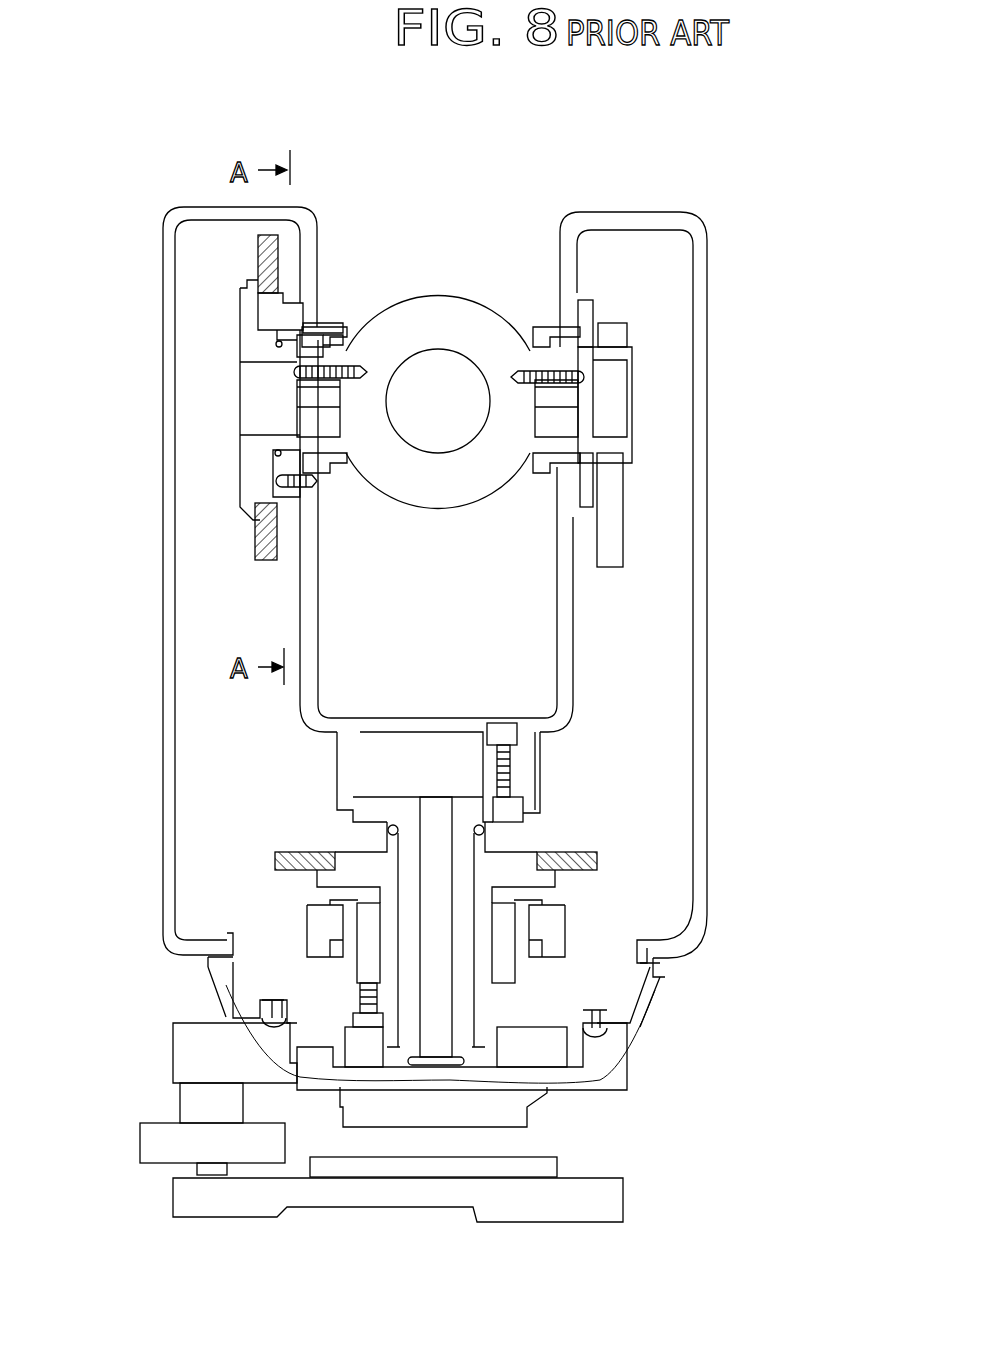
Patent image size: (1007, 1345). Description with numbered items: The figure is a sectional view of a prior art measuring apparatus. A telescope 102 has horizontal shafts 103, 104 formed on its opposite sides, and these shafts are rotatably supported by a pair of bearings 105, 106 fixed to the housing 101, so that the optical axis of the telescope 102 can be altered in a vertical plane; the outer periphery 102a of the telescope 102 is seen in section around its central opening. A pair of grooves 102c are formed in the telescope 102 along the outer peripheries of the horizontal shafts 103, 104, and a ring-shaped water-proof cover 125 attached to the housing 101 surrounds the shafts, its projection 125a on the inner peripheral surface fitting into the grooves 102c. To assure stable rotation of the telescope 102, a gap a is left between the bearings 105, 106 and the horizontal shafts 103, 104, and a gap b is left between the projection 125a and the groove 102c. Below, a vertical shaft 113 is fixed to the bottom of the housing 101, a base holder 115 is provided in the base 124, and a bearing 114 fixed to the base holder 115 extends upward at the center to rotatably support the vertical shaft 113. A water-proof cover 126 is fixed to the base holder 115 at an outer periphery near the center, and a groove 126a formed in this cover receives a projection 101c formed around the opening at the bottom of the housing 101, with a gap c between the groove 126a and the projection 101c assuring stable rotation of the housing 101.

The housing 101 is at (570, 675).
The projection 101c is at (653, 948).
The telescope 102 is at (485, 473).
The outer peripheral surface 102a is at (485, 300).
The groove 102c is at (327, 343).
The horizontal shaft 103 is at (247, 345).
The horizontal shaft 104 is at (613, 358).
The bearing 105 is at (288, 303).
The bearing 106 is at (587, 310).
The vertical shaft 113 is at (463, 845).
The bearing 114 is at (543, 882).
The base holder 115 is at (300, 1040).
The base 124 is at (188, 1072).
The water-proof cover 125 is at (325, 327).
The projection 125a is at (330, 338).
The water-proof cover 126 is at (647, 993).
The groove 126a is at (663, 980).
The gap a is at (292, 447).
The gap b is at (343, 337).
The gap c is at (665, 965).